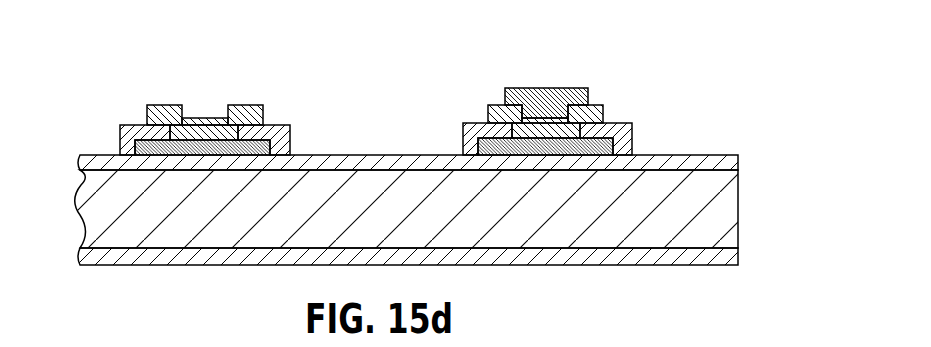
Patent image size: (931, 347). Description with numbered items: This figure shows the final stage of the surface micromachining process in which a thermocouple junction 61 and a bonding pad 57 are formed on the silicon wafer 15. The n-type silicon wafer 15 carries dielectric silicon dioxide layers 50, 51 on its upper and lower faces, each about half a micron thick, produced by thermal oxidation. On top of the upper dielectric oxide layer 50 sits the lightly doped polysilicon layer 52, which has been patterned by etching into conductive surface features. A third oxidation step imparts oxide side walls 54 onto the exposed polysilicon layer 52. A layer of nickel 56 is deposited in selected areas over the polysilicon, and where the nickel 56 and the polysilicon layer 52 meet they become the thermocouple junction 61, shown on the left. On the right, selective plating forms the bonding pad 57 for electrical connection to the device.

The silicon wafer 15 is at (735, 206).
The dielectric silicon dioxide layer 50 is at (733, 160).
The dielectric silicon dioxide layer 51 is at (735, 258).
The polysilicon layer 52 is at (615, 127).
The side walls 54 is at (125, 135).
The nickel layer 56 is at (260, 107).
The bonding pad 57 is at (543, 88).
The thermocouple junction 61 is at (200, 100).